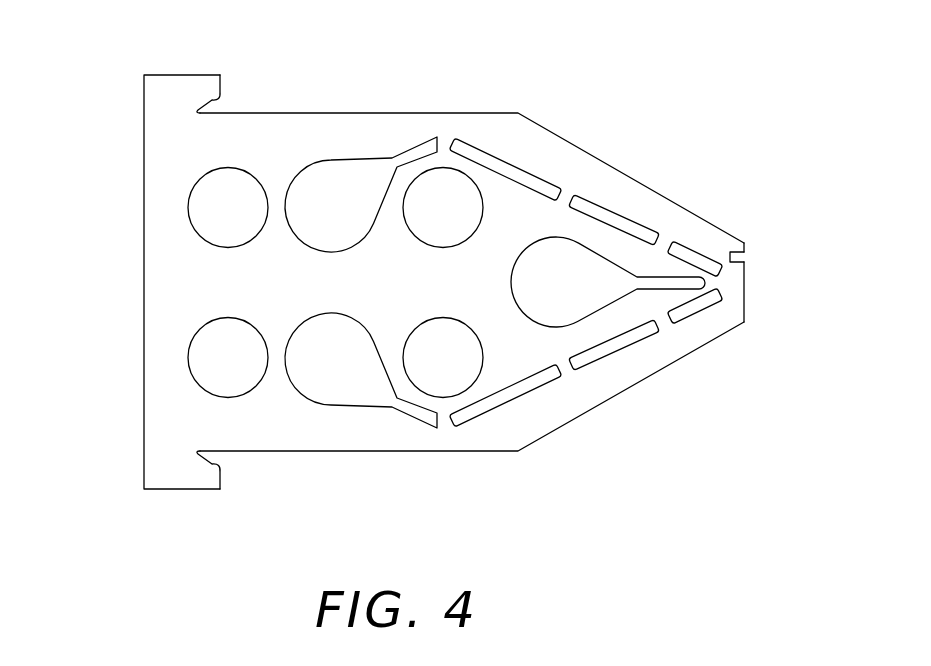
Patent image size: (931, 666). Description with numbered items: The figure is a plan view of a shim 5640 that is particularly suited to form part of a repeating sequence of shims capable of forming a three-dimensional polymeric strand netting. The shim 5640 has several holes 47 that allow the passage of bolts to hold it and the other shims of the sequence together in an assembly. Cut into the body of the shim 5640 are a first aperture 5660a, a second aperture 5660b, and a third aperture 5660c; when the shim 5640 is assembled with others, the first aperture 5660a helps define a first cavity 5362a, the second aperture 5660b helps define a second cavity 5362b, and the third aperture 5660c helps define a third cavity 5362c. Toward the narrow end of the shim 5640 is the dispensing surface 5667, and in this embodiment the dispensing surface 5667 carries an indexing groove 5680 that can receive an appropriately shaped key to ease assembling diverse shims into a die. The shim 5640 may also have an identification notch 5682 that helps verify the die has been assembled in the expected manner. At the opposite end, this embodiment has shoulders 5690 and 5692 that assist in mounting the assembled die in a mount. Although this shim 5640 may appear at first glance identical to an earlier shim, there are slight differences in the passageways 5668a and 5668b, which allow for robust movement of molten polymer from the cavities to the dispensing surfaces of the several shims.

The shim 5640 is at (538, 58).
The shoulder 5690 is at (222, 102).
The shoulder 5692 is at (220, 467).
The indexing groove 5680 is at (747, 252).
The identification notch 5682 is at (747, 265).
The dispensing surface 5667 is at (746, 298).
The holes 47 is at (213, 337).
The first aperture 5660a is at (239, 156).
The second aperture 5660b is at (238, 414).
The third aperture 5660c is at (625, 268).
The first cavity 5362a is at (315, 205).
The second cavity 5362b is at (315, 358).
The third cavity 5362c is at (585, 265).
The passageway 5668a is at (632, 226).
The passageway 5668b is at (600, 354).